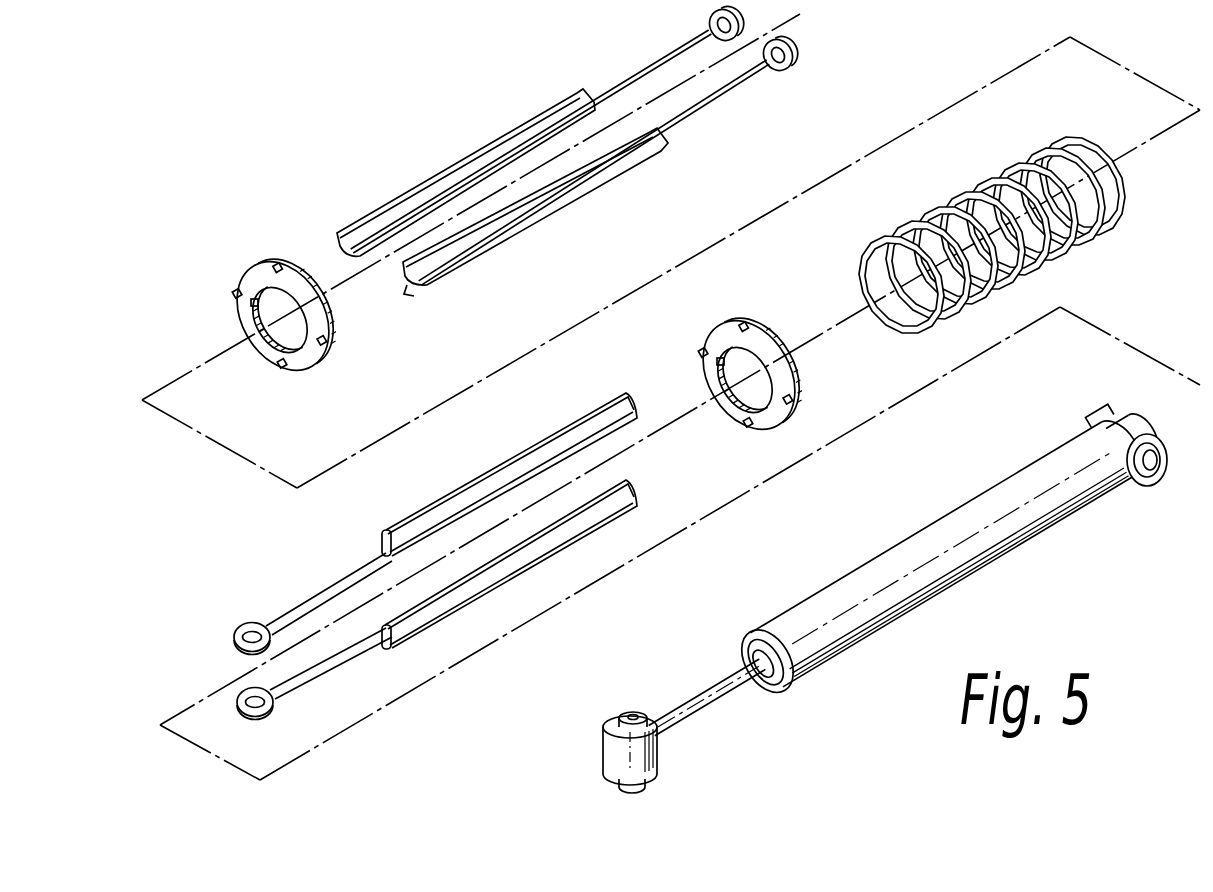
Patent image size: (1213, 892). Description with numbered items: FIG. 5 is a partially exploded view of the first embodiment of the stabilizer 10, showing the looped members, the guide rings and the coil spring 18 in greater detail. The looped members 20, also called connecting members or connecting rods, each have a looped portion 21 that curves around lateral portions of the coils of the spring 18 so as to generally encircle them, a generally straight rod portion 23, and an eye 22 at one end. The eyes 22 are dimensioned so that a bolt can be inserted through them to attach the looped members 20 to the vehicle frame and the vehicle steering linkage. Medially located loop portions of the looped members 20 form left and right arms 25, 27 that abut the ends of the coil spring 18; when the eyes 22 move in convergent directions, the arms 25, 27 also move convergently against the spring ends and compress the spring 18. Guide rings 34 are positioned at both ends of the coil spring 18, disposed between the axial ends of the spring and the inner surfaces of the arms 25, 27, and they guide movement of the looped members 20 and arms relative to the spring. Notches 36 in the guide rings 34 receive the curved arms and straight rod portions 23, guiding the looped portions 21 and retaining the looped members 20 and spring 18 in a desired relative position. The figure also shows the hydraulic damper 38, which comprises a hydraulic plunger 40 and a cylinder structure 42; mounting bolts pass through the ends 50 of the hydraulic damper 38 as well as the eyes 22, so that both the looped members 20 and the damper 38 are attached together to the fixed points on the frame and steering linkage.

The stabilizer 10 is at (200, 530).
The coil spring 18 is at (931, 219).
The looped member 20 is at (669, 72).
The looped portion 21 is at (448, 180).
The eye 22 is at (792, 55).
The straight rod portion 23 is at (700, 100).
The left arm 25 is at (666, 142).
The right arm 27 is at (407, 290).
The guide ring 34 is at (308, 364).
The notch 36 is at (334, 341).
The hydraulic damper 38 is at (880, 631).
The hydraulic plunger 40 is at (708, 712).
The cylinder structure 42 is at (1106, 502).
The end of the hydraulic damper 50 is at (606, 746).